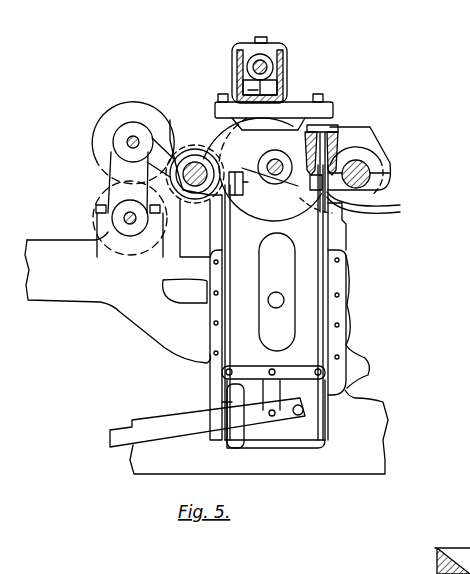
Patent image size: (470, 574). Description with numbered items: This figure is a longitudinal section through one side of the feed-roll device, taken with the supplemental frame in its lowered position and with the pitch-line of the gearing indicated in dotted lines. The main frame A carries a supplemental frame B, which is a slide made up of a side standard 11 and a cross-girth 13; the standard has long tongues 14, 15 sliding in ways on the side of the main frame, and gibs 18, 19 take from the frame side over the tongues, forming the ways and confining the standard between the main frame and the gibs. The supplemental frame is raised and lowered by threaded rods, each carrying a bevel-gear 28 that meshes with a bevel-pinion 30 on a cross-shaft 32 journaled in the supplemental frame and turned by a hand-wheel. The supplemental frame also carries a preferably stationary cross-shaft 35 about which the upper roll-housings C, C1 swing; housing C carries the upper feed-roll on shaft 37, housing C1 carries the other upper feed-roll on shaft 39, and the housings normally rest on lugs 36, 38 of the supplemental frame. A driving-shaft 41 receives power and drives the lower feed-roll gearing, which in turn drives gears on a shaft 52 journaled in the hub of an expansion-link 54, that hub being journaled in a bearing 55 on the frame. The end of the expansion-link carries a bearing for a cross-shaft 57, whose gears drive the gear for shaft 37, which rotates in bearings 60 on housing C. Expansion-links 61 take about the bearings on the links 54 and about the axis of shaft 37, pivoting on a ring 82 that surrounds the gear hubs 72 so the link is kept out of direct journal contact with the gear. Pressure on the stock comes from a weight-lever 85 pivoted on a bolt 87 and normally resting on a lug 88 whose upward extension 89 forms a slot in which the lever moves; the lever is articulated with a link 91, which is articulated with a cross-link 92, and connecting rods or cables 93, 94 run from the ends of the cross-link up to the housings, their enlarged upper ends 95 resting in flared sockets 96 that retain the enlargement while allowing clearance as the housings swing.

The main frame A is at (206, 337).
The supplemental frame B is at (293, 117).
The upper roll-housing C is at (246, 184).
The upper roll-housing C1 is at (287, 146).
The side standard 11 is at (275, 326).
The cross-girth 13 is at (322, 108).
The tongue 14 is at (224, 243).
The tongue 15 is at (334, 240).
The gib 18 is at (212, 376).
The gib 19 is at (335, 338).
The bevel-gear 28 is at (248, 90).
The bevel-pinion 30 is at (235, 62).
The cross-shaft 32 is at (268, 62).
The cross-shaft 35 is at (277, 176).
The lug 36 is at (345, 200).
The shaft 37 is at (208, 152).
The lug 38 is at (244, 190).
The shaft 39 is at (375, 168).
The driving-shaft 41 is at (276, 291).
The shaft 52 is at (130, 226).
The expansion-link 54 is at (120, 182).
The bearing 55 is at (100, 218).
The cross-shaft 57 is at (126, 142).
The bearing 60 is at (428, 566).
The expansion-link 61 is at (153, 118).
The hub 72 is at (194, 186).
The ring 82 is at (193, 160).
The weight-lever 85 is at (166, 440).
The bolt 87 is at (298, 416).
The lug 88 is at (236, 440).
The upward extension 89 is at (222, 405).
The link 91 is at (272, 398).
The cross-link 92 is at (293, 372).
The connecting rod or cable 93 is at (225, 316).
The connecting rod or cable 94 is at (347, 283).
The enlargement 95 is at (365, 140).
The socket 96 is at (336, 128).